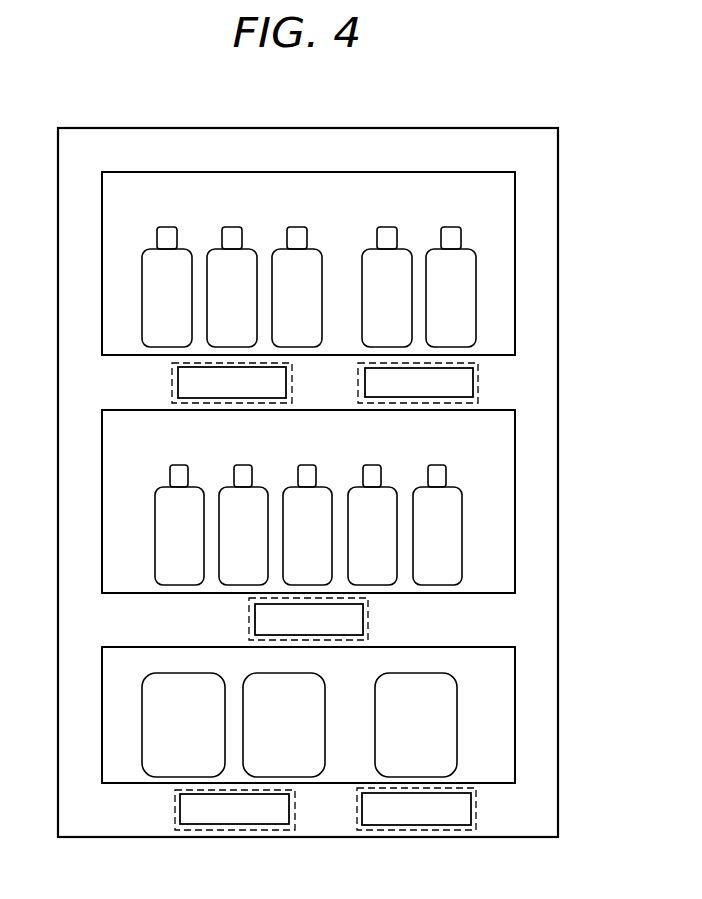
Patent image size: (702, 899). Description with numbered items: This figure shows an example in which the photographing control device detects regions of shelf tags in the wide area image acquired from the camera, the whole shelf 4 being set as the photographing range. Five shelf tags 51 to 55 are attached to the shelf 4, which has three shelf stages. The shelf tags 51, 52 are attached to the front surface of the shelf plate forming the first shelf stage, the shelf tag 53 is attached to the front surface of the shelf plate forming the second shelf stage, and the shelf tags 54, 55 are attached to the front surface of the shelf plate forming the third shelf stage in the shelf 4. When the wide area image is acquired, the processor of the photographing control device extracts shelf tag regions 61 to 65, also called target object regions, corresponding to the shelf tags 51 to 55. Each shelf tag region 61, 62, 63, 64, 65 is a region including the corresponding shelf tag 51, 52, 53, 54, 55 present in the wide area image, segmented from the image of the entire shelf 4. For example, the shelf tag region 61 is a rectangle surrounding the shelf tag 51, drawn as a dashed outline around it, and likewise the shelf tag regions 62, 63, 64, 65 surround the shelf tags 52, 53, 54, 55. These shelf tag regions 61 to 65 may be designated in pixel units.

The shelf 4 is at (522, 128).
The shelf tag 51 is at (184, 375).
The shelf tag 52 is at (468, 377).
The shelf tag 53 is at (260, 621).
The shelf tag 54 is at (187, 800).
The shelf tag 55 is at (466, 805).
The shelf tag region 61 is at (168, 388).
The shelf tag region 62 is at (480, 389).
The shelf tag region 63 is at (369, 623).
The shelf tag region 64 is at (171, 814).
The shelf tag region 65 is at (478, 815).